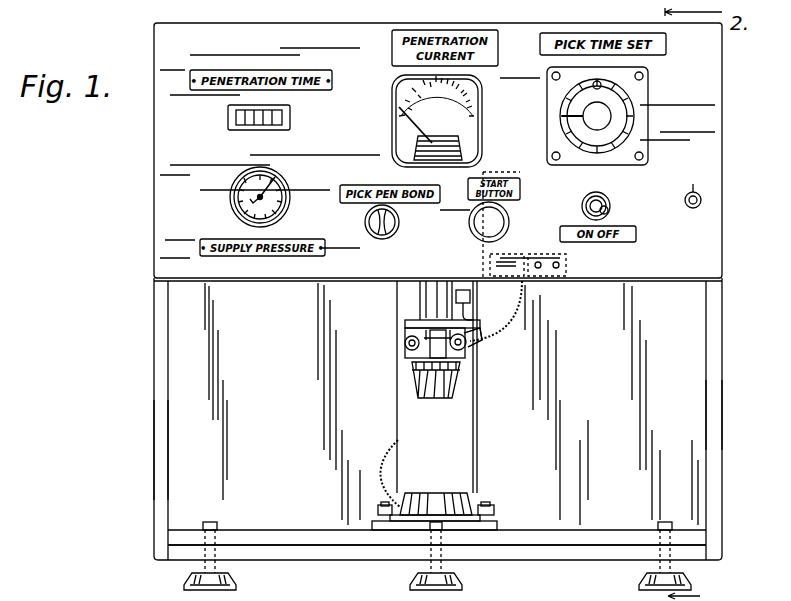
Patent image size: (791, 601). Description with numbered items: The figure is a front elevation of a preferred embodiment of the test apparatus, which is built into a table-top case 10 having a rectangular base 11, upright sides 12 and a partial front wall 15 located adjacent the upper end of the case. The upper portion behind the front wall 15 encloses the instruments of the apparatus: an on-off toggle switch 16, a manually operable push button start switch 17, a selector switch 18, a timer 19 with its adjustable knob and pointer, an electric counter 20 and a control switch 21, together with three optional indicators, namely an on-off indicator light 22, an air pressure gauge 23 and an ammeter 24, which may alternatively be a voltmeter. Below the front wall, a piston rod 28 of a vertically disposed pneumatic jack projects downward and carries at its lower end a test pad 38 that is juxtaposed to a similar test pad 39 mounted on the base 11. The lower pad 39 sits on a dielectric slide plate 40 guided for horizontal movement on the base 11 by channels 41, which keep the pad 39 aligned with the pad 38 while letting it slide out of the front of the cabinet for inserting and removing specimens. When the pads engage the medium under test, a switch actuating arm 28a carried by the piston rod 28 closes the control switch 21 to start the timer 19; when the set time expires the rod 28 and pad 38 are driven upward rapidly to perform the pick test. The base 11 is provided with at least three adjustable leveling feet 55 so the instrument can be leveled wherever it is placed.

The case 10 is at (146, 385).
The base 11 is at (548, 556).
The upright sides 12 is at (162, 443).
The partial front wall 15 is at (165, 155).
The on-off toggle switch 16 is at (610, 204).
The push button start switch 17 is at (509, 222).
The selector switch 18 is at (380, 238).
The timer 19 is at (643, 102).
The electric counter 20 is at (292, 118).
The control switch 21 is at (525, 283).
The on-off indicator light 22 is at (690, 185).
The air pressure gauge 23 is at (233, 206).
The ammeter 24 is at (395, 132).
The piston rod 28 is at (435, 340).
The switch actuating arm 28a is at (469, 337).
The test pad 38 is at (455, 387).
The test pad 39 is at (455, 498).
The dielectric slide plate 40 is at (465, 517).
The channels 41 is at (378, 512).
The adjustable leveling feet 55 is at (238, 582).